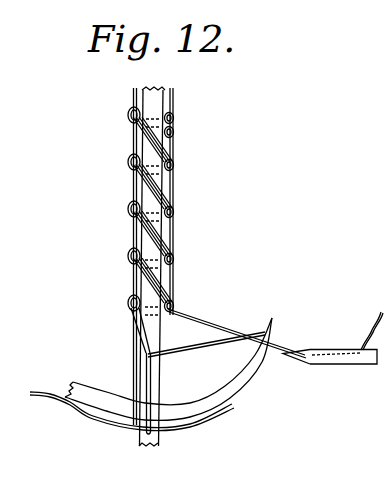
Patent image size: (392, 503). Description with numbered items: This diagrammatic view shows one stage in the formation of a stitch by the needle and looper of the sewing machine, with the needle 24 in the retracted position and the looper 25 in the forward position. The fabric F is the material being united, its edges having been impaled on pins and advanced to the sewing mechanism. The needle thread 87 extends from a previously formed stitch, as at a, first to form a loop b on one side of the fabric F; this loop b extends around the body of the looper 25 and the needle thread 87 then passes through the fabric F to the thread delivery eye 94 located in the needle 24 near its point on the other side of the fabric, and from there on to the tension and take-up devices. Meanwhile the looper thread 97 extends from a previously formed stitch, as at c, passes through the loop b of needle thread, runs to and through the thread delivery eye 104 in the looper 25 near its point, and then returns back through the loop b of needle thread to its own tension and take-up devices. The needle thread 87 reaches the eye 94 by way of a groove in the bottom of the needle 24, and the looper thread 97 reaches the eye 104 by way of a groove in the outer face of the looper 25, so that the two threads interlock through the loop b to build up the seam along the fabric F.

The fabric F is at (160, 108).
The previously formed stitch c is at (137, 282).
The previously formed stitch a is at (134, 303).
The loop of needle thread b is at (153, 373).
The looper thread 97 is at (210, 348).
The needle thread 87 is at (277, 341).
The needle 24 is at (333, 369).
The thread delivery eye 94 is at (315, 363).
The looper 25 is at (171, 397).
The thread delivery eye 104 is at (262, 337).